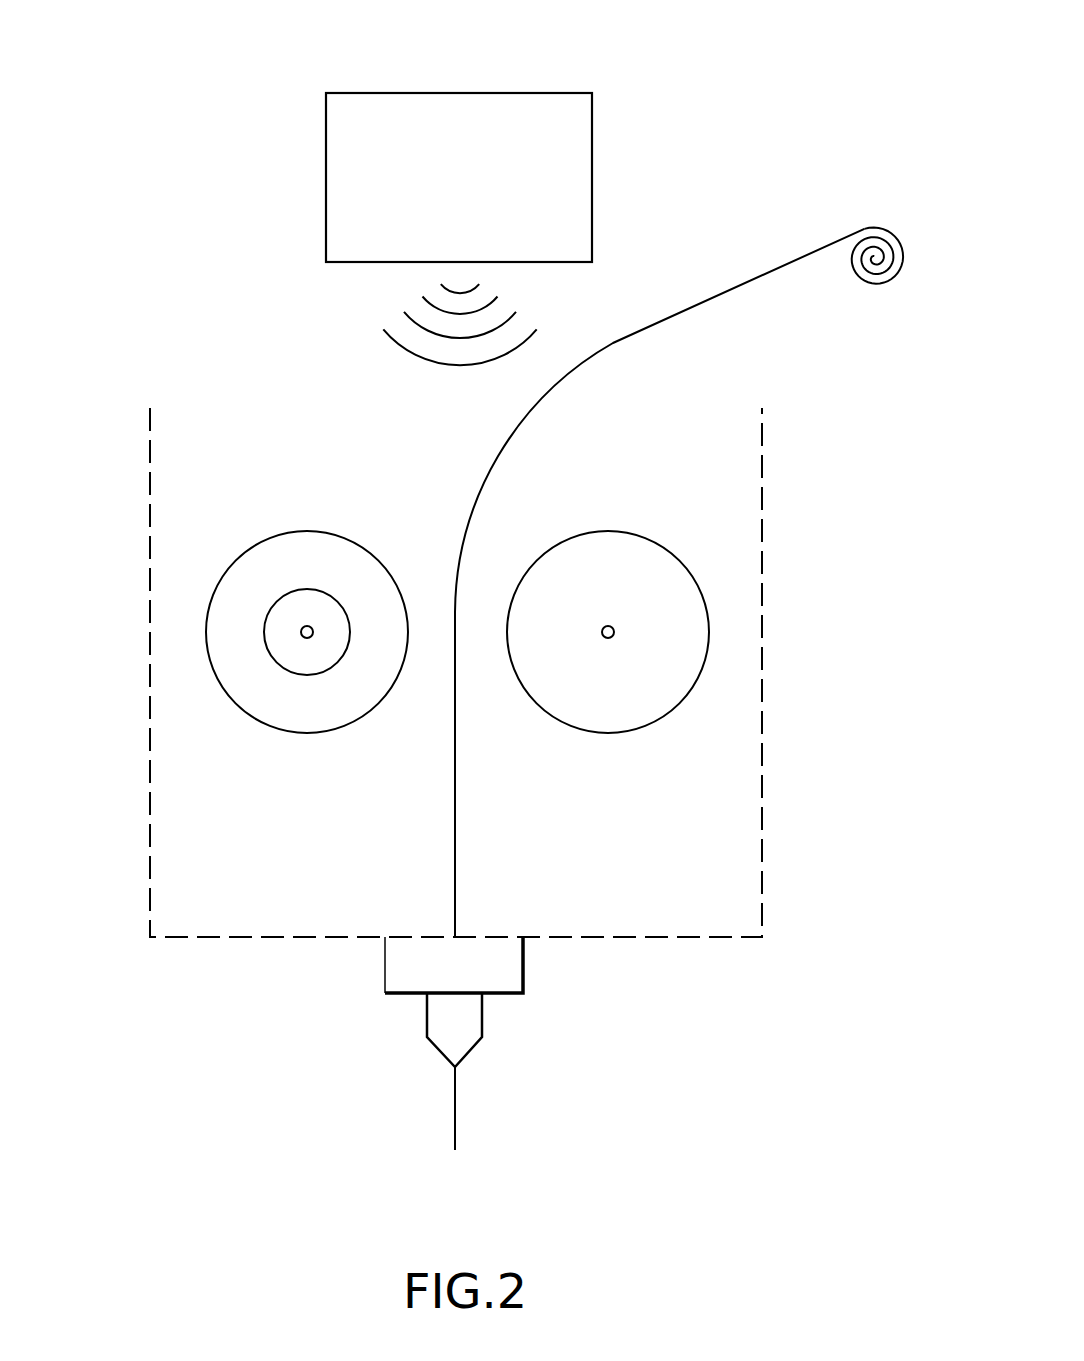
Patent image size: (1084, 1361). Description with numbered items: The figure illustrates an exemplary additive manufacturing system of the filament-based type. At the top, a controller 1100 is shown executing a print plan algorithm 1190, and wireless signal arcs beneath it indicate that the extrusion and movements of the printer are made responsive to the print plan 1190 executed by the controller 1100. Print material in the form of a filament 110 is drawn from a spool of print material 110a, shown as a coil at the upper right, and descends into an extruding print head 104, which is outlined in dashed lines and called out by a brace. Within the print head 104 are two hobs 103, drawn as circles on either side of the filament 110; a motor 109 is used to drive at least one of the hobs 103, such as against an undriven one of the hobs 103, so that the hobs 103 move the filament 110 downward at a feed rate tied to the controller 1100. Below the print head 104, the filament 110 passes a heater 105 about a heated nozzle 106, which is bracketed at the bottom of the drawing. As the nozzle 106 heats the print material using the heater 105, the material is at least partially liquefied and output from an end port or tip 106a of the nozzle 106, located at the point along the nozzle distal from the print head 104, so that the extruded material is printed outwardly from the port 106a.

The controller 1100 is at (572, 93).
The print plan algorithm 1190 is at (484, 197).
The filament 110 is at (613, 343).
The spool of print material 110a is at (877, 289).
The hobs 103 is at (293, 531).
The motor 109 is at (265, 638).
The extruding print head 104 is at (772, 416).
The heater 105 is at (385, 977).
The heated nozzle 106 is at (536, 942).
The end port/tip 106a is at (452, 1068).